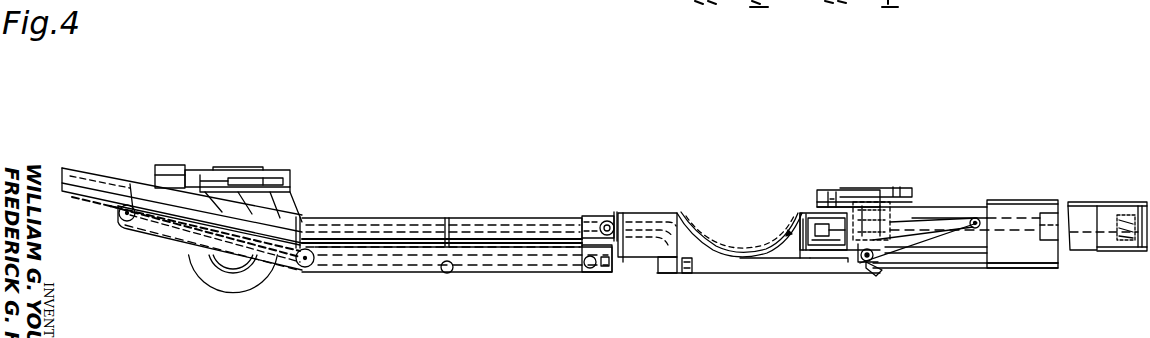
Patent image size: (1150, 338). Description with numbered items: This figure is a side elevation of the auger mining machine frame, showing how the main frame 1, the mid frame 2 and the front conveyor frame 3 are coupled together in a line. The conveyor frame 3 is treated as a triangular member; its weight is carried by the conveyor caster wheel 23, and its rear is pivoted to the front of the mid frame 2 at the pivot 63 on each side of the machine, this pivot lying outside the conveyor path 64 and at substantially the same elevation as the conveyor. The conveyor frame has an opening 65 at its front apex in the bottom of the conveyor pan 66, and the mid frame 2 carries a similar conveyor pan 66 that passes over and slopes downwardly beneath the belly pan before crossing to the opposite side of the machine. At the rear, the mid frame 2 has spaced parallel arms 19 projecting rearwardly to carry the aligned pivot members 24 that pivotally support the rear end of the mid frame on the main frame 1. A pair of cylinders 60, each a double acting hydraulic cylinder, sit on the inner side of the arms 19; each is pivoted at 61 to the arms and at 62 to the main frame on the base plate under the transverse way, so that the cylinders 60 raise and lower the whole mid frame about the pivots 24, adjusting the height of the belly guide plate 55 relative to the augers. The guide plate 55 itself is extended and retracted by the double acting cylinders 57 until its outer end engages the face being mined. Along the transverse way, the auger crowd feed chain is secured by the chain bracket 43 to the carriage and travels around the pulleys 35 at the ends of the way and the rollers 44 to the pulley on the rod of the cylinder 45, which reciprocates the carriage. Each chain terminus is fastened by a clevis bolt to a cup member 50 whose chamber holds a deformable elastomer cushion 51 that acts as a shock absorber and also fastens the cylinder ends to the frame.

The main frame 1 is at (1040, 202).
The mid frame 2 is at (833, 264).
The conveyor frame 3 is at (422, 268).
The spaced parallel arms 19 is at (918, 235).
The conveyor caster wheel 23 is at (238, 164).
The pivot members 24 is at (977, 220).
The pulleys 35 is at (812, 199).
The chain bracket 43 is at (812, 212).
The rollers 44 is at (847, 189).
The cylinder 45 is at (1037, 246).
The cup member 50 is at (1133, 202).
The elastomer cushion 51 is at (1117, 247).
The extendable belly guide plate 55 is at (720, 231).
The double acting cylinders 57 is at (786, 229).
The cylinders 60 is at (873, 285).
The pivot 61 is at (866, 260).
The pivot 62 is at (865, 199).
The pivot 63 is at (611, 219).
The conveyor path 64 is at (648, 213).
The opening 65 is at (117, 166).
The conveyor pan 66 is at (368, 217).